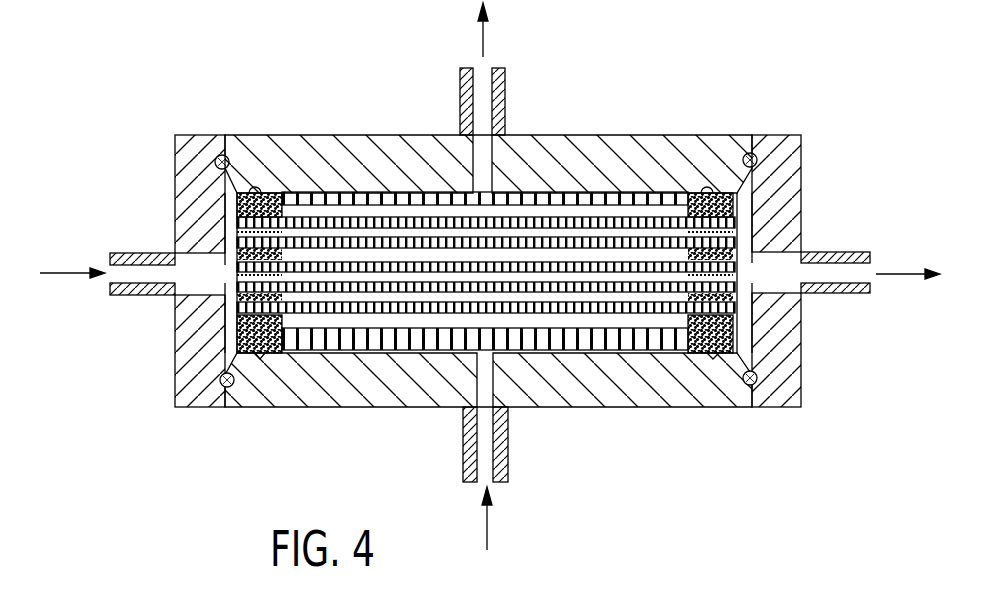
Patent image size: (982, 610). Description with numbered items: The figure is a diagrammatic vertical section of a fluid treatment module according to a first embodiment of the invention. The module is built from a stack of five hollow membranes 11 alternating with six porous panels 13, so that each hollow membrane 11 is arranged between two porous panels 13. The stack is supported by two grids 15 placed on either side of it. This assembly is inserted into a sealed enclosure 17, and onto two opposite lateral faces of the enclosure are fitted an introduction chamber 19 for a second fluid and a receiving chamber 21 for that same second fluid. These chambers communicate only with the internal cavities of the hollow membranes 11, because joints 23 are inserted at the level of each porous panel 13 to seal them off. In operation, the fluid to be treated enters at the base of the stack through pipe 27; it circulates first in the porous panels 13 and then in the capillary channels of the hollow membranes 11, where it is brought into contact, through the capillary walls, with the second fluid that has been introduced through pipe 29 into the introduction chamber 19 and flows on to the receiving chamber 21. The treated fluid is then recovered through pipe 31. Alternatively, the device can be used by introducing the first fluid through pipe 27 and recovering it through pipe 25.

The hollow membrane 11 is at (740, 218).
The porous panel 13 is at (307, 232).
The grid 15 is at (625, 192).
The sealed enclosure 17 is at (540, 140).
The introduction chamber 19 is at (228, 277).
The receiving chamber 21 is at (743, 288).
The joint 23 is at (182, 356).
The pipe 25 is at (506, 458).
The pipe 27 is at (462, 80).
The pipe 29 is at (132, 254).
The pipe 31 is at (850, 252).